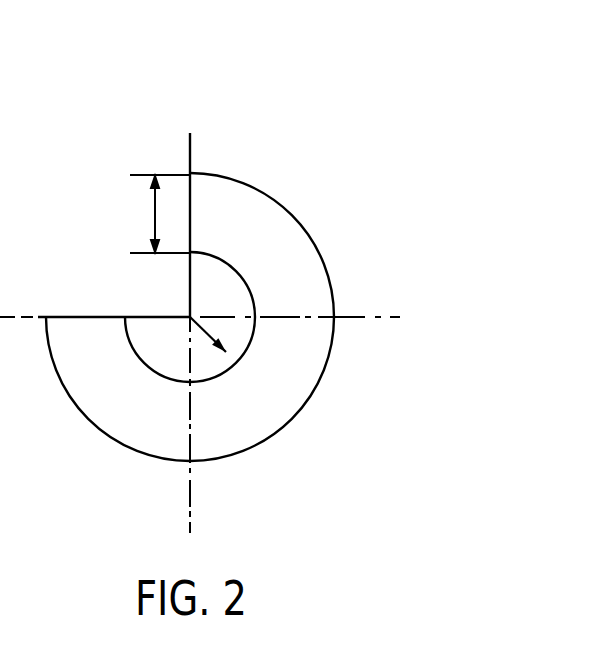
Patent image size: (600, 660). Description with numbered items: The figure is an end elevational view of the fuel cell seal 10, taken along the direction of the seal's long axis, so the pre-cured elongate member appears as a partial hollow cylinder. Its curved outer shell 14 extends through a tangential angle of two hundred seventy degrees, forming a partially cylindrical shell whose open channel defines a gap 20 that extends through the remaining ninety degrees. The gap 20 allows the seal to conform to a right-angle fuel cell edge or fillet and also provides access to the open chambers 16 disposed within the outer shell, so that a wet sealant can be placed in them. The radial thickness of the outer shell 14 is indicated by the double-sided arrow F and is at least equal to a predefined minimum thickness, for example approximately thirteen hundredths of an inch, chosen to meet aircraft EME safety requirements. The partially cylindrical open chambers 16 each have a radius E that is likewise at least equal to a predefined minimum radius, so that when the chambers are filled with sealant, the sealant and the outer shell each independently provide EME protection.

The fuel cell seal 10 is at (347, 101).
The curved outer shell 14 is at (307, 232).
The open chambers 16 is at (225, 301).
The gap 20 is at (116, 266).
The radial thickness F is at (152, 177).
The radius E is at (213, 333).